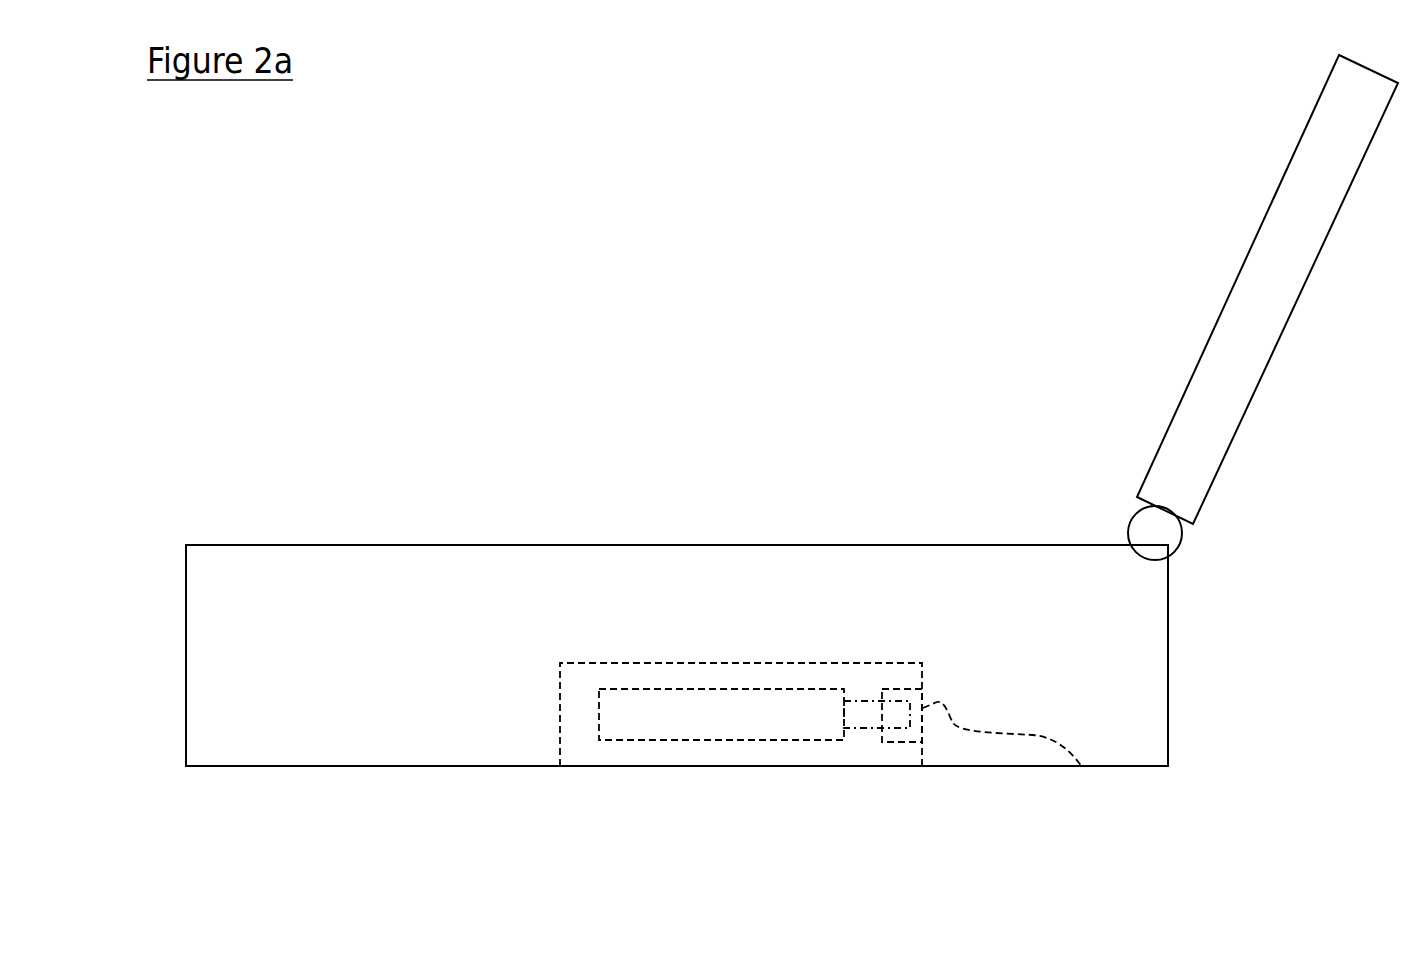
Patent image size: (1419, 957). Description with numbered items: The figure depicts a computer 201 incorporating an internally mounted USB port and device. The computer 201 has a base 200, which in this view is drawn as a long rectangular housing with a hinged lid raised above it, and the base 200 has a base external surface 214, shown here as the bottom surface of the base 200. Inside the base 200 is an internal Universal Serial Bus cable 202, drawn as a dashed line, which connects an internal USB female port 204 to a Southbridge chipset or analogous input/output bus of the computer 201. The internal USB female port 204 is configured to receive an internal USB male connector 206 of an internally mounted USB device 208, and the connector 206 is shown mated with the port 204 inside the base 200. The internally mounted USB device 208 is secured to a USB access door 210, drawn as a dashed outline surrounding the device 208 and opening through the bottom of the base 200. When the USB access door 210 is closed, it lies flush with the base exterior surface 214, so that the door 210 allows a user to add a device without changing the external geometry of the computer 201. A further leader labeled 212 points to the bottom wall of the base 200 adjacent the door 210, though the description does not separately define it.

The base 200 is at (298, 626).
The computer 201 is at (367, 358).
The internal Universal Serial Bus (USB) cable 202 is at (1007, 745).
The internal USB female port 204 is at (908, 690).
The internal USB male connector 206 is at (863, 715).
The internally mounted USB device 208 is at (687, 715).
The USB access door 210 is at (553, 713).
The bottom wall of base housing 212 is at (745, 772).
The base external surface 214 is at (298, 772).